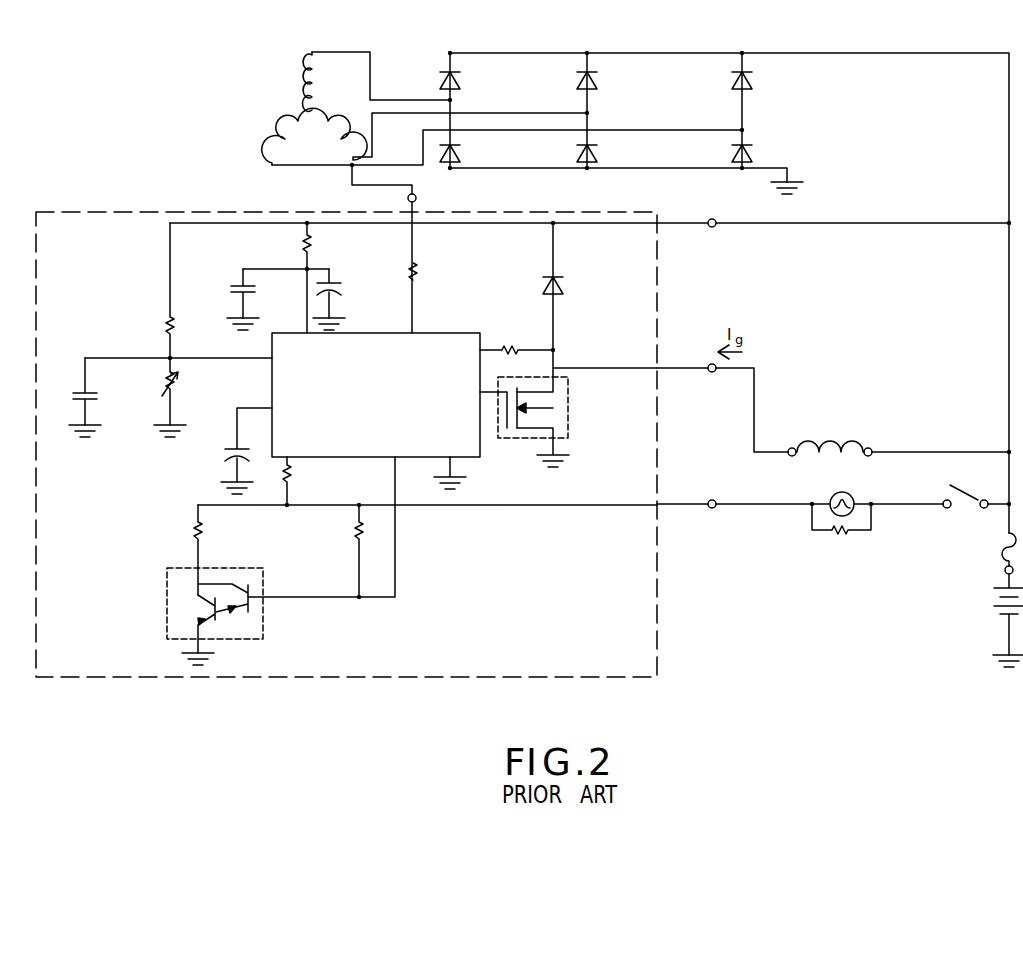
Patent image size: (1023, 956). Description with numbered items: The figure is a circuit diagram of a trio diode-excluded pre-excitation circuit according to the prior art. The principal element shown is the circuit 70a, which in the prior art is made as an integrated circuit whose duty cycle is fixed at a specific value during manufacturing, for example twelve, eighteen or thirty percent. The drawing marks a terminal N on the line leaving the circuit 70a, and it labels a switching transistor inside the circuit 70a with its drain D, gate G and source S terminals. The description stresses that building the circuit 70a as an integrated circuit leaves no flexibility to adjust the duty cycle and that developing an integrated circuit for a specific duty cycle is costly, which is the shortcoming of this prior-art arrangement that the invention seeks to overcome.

The circuit 70a is at (93, 210).
The neutral terminal N is at (833, 207).
The drain terminal of MOSFET D is at (587, 371).
The gate terminal of MOSFET G is at (493, 410).
The source terminal of MOSFET S is at (543, 447).